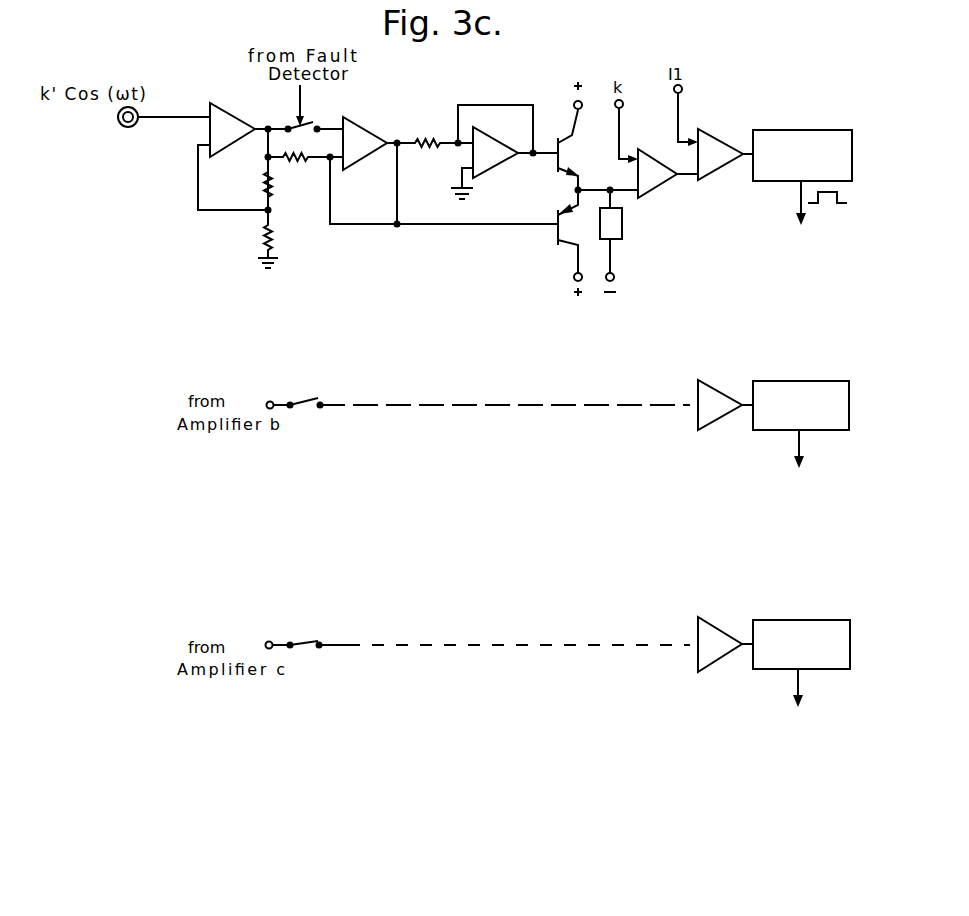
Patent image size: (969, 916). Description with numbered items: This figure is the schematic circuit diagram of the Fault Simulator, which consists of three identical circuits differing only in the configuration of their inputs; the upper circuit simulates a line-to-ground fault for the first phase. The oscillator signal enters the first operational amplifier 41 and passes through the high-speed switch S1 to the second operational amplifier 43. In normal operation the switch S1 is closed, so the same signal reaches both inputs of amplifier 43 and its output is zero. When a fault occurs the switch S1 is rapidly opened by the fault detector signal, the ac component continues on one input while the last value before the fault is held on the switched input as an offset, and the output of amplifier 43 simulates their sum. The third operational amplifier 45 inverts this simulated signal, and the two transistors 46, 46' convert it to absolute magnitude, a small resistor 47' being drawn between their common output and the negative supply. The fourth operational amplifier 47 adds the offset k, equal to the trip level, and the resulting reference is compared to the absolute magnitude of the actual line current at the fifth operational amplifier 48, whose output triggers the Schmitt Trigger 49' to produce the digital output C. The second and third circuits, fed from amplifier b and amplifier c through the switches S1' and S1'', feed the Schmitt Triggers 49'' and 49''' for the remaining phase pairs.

The first operational amplifier 41 is at (227, 120).
The second operational amplifier 43 is at (366, 137).
The third operational amplifier 45 is at (500, 162).
The PNP transistor 46 is at (556, 135).
The PNP transistor 46' is at (556, 243).
The fourth operational amplifier 47 is at (662, 184).
The resistor 47' is at (636, 241).
The fifth operational amplifier 48 is at (719, 145).
The Schmitt Trigger 49' is at (822, 179).
The Schmitt Trigger 49'' is at (828, 437).
The Schmitt Trigger 49''' is at (827, 670).
The switch S1 is at (314, 112).
The switch S1' is at (320, 391).
The switch S1'' is at (325, 632).